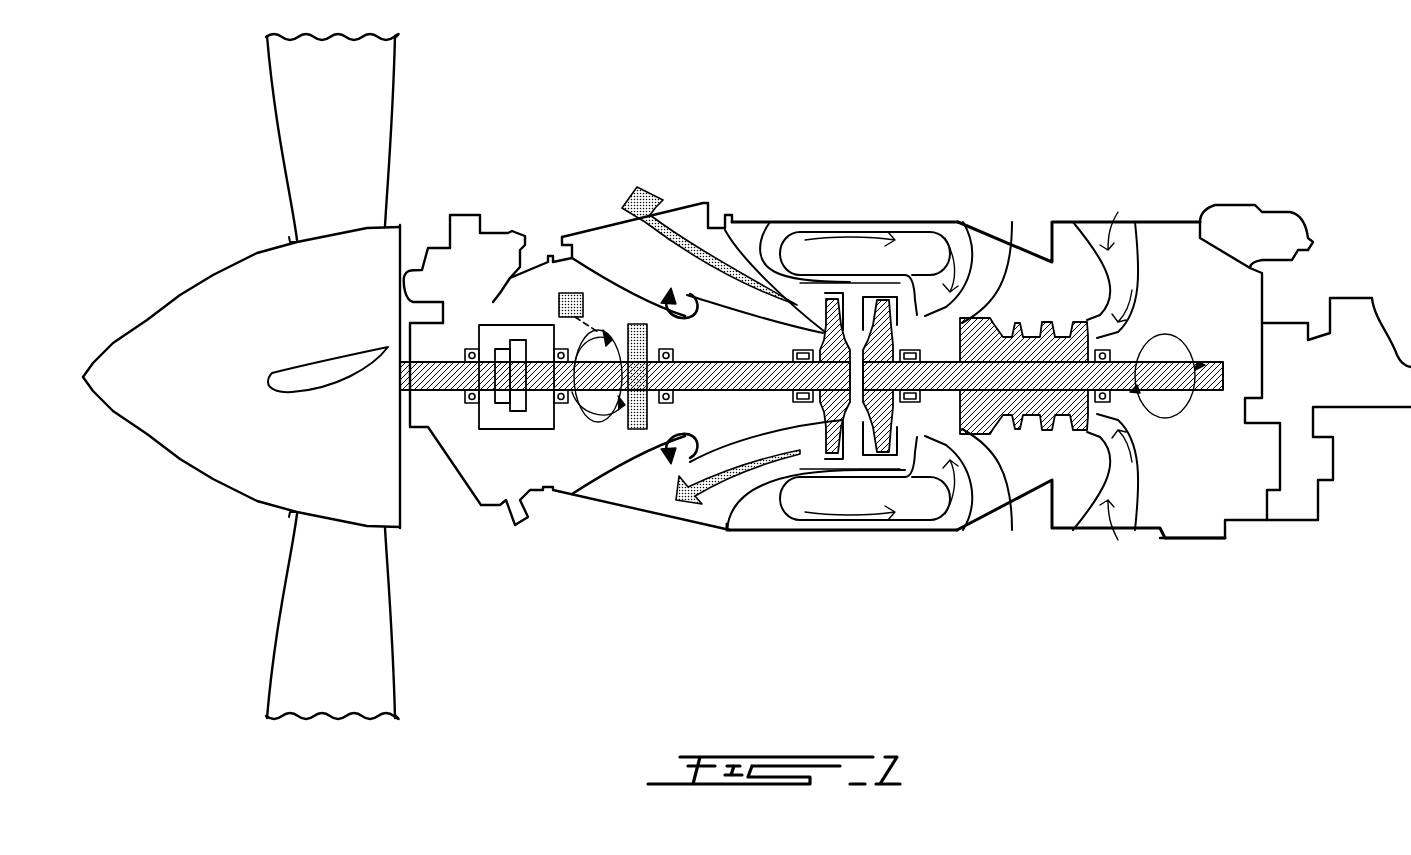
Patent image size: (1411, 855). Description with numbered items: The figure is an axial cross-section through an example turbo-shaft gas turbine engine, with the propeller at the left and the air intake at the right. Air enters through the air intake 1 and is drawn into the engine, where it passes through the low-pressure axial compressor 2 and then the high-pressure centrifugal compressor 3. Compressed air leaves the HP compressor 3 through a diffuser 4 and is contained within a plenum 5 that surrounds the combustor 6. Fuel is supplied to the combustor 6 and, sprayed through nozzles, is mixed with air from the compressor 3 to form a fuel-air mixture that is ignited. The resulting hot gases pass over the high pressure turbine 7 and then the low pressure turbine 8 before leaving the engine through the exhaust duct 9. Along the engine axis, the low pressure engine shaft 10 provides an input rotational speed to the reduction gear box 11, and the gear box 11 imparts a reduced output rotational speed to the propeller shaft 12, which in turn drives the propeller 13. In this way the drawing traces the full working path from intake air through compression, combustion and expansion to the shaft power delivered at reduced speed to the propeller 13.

The air intake 1 is at (1133, 222).
The low-pressure axial compressor 2 is at (1043, 445).
The high-pressure centrifugal compressor 3 is at (1010, 235).
The diffuser 4 is at (958, 222).
The plenum 5 is at (778, 233).
The combustor 6 is at (862, 250).
The high pressure turbine 7 is at (884, 288).
The low pressure turbine 8 is at (814, 290).
The exhaust duct 9 is at (600, 228).
The low pressure engine shaft 10 is at (703, 392).
The reduction gear box 11 is at (513, 430).
The propeller shaft 12 is at (441, 427).
The propeller 13 is at (197, 427).